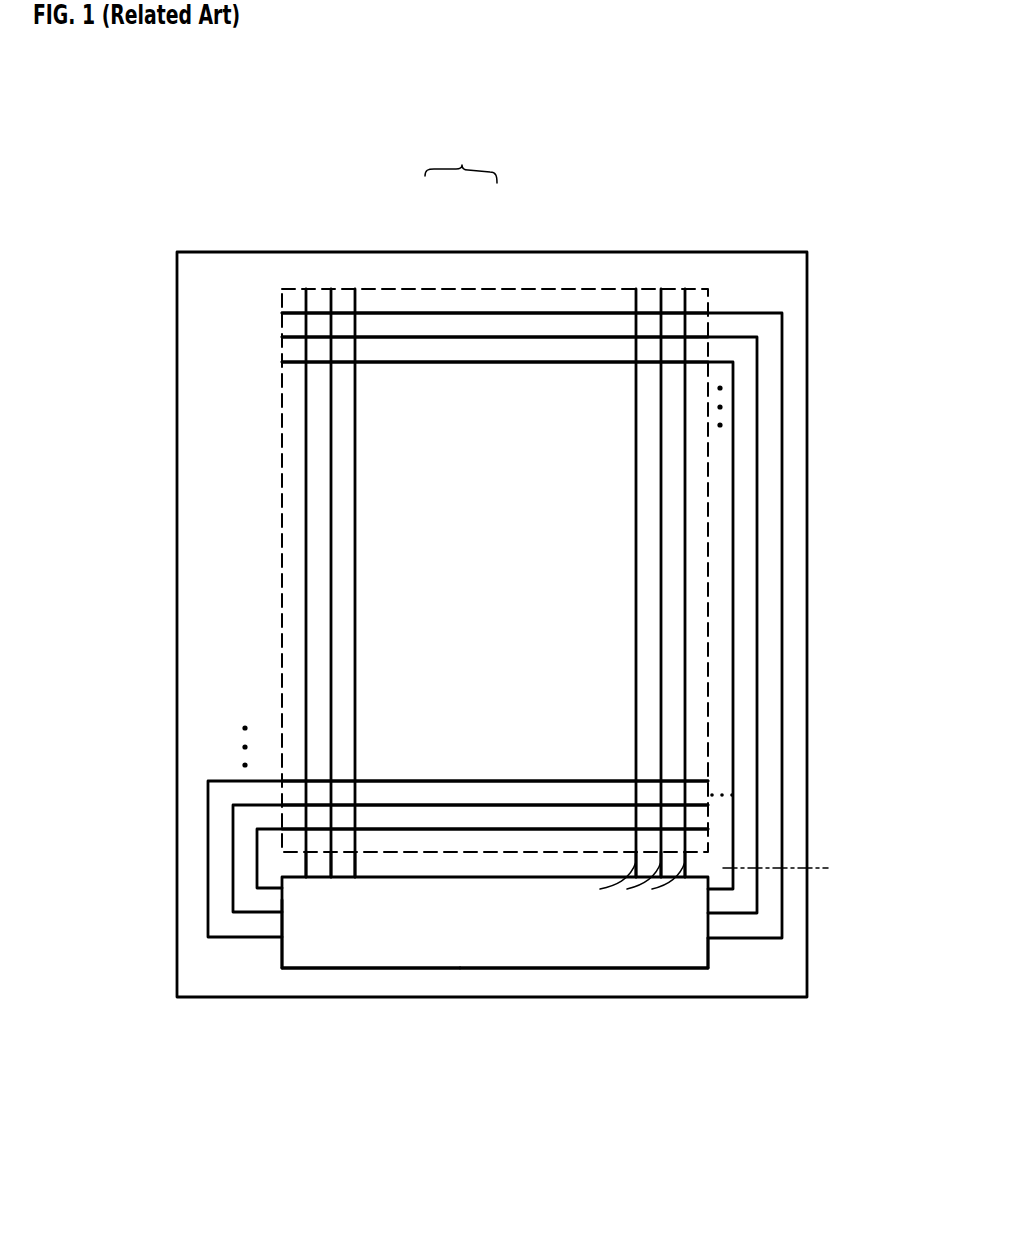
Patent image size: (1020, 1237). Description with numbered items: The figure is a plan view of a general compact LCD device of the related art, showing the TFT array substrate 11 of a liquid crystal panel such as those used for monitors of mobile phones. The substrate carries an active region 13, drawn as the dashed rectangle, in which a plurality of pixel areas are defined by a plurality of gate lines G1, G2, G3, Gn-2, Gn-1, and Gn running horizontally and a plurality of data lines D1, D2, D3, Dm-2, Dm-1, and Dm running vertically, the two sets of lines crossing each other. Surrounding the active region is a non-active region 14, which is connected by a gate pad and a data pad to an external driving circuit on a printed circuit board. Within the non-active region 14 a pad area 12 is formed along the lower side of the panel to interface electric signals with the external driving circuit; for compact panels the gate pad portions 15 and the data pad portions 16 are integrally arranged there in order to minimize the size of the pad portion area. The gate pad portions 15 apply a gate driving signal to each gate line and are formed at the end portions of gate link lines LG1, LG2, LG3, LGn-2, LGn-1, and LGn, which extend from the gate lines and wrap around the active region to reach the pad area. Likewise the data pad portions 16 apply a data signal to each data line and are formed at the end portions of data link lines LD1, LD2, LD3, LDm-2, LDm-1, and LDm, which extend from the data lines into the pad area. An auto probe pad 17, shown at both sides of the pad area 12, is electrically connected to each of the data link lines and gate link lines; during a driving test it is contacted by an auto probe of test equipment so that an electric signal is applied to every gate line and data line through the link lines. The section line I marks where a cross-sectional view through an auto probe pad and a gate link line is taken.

The substrate 11 is at (461, 161).
The pad area 12 is at (349, 968).
The active region 13 is at (460, 303).
The non-active region 14 is at (415, 263).
The gate pad portions 15 is at (403, 962).
The data pad portions 16 is at (532, 962).
The auto probe pad 17 is at (314, 962).
The data line D1 is at (306, 303).
The data line D2 is at (331, 303).
The data line D3 is at (355, 303).
The data line Dm-2 is at (636, 300).
The data line Dm-1 is at (661, 300).
The data line Dm is at (687, 302).
The gate line G1 is at (507, 313).
The gate line G2 is at (535, 337).
The gate line G3 is at (572, 362).
The gate line Gn-2 is at (693, 780).
The gate line Gn-1 is at (700, 805).
The gate line Gn is at (700, 830).
The gate link line LG1 is at (782, 330).
The gate link line LG2 is at (757, 360).
The gate link line LG3 is at (733, 400).
The gate link line LGn-2 is at (222, 780).
The gate link line LGn-1 is at (233, 825).
The gate link line LGn is at (257, 870).
The data link line LD1 is at (306, 862).
The data link line LD2 is at (330, 862).
The data link line LD3 is at (352, 878).
The data link line LDm-2 is at (604, 963).
The data link line LDm-1 is at (633, 963).
The data link line LDm is at (664, 963).
The section line I-I' I is at (777, 868).